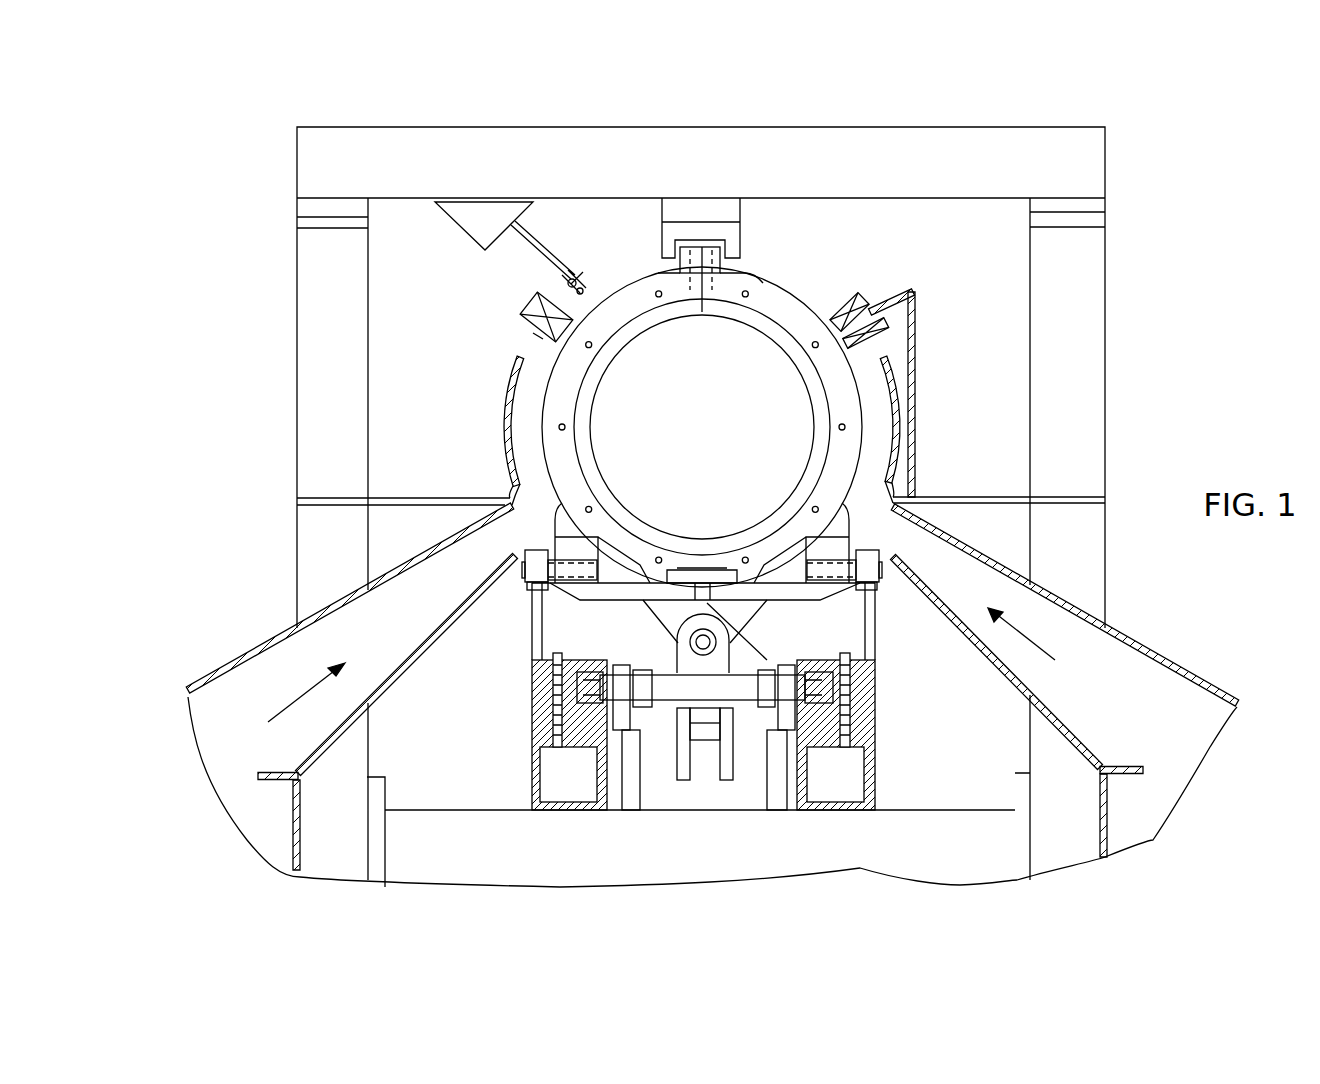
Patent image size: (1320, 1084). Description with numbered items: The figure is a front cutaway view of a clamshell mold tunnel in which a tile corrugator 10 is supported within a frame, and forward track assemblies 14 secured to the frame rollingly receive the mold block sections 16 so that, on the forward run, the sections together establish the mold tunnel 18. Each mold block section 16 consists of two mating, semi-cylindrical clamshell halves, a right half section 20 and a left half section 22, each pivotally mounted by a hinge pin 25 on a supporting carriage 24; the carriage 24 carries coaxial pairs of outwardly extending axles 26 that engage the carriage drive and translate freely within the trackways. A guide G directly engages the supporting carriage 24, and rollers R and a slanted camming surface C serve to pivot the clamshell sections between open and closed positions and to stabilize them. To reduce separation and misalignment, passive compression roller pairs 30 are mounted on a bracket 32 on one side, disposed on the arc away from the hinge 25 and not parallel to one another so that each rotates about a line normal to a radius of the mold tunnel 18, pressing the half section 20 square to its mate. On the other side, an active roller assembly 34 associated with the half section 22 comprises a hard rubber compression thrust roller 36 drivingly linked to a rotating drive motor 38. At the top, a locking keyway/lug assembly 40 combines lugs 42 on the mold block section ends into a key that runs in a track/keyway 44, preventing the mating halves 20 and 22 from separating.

The tile corrugator 10 is at (824, 122).
The forward track assemblies 14 is at (703, 672).
The mold block section 16 is at (767, 283).
The mold tunnel 18 is at (686, 428).
The right mold block half section 20 is at (840, 467).
The left mold block half section 22 is at (560, 447).
The supporting carriage 24 is at (760, 660).
The hinge/pivot pin 25 is at (677, 650).
The axles 26 is at (592, 663).
The compression/pincher roller pairs 30 is at (847, 300).
The bracket 32 is at (918, 388).
The active roller assembly 34 is at (510, 260).
The compression thrust roller 36 is at (520, 303).
The rotating drive motor 38 is at (468, 222).
The locking keyway/lug assembly 40 is at (717, 235).
The lugs 42 is at (678, 270).
The track/keyway 44 is at (662, 230).
The rollers R is at (533, 553).
The camming surface C is at (530, 598).
The guide G is at (708, 765).